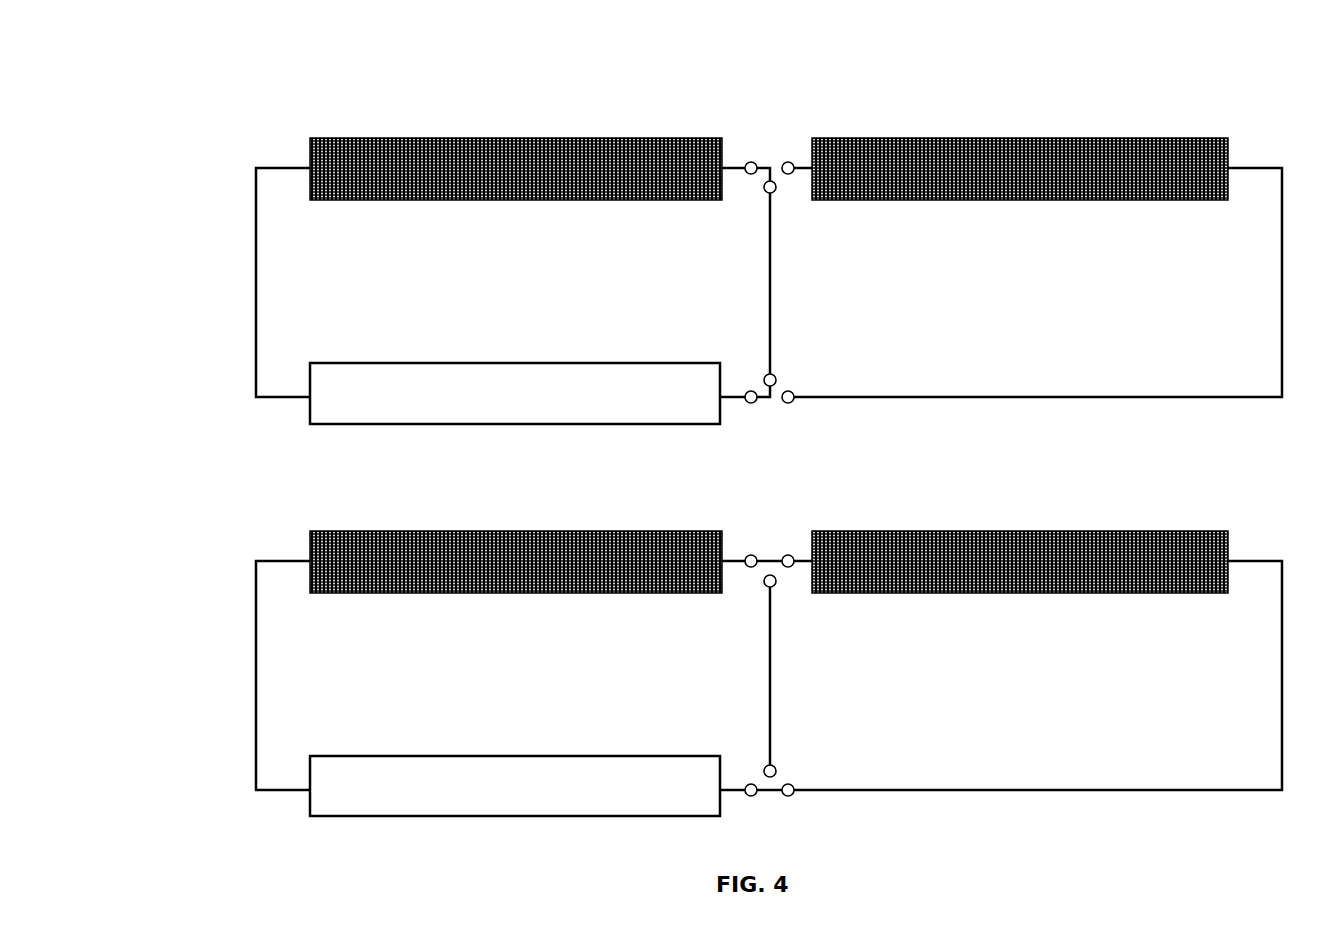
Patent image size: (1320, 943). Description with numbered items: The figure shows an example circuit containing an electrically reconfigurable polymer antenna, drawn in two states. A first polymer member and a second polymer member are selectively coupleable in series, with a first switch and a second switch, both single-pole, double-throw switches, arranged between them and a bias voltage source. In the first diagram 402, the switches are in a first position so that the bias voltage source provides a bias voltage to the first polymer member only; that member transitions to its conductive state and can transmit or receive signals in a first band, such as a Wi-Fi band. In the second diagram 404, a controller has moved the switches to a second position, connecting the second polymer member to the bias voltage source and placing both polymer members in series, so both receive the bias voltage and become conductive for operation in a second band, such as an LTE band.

The first diagram 402 is at (203, 347).
The second diagram 404 is at (198, 738).